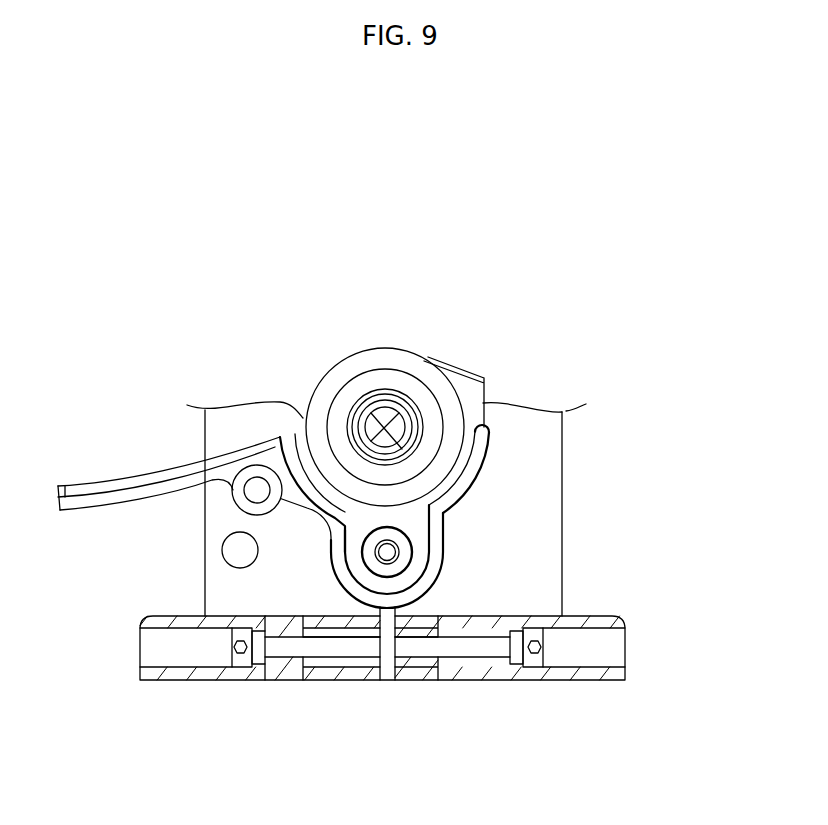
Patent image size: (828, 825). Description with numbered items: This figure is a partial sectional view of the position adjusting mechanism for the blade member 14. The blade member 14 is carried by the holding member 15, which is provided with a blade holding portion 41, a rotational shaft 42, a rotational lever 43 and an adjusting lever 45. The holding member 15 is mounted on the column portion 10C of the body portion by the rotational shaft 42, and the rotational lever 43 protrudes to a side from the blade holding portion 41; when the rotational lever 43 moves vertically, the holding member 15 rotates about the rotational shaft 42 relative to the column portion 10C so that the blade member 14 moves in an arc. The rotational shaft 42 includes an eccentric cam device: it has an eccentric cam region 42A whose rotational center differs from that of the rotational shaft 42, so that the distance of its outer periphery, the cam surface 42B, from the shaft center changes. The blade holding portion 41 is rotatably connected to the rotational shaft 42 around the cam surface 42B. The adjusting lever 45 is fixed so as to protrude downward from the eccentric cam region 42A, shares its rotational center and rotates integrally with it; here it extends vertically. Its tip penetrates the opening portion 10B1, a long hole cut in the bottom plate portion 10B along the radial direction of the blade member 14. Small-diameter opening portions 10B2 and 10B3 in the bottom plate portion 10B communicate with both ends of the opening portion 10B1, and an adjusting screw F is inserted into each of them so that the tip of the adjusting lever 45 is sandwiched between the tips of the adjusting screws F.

The blade member 14 is at (397, 360).
The holding member 15 is at (279, 414).
The blade holding portion 41 is at (477, 450).
The rotational shaft 42 is at (393, 552).
The eccentric cam region 42A is at (397, 538).
The cam surface 42B is at (357, 550).
The rotational lever 43 is at (120, 490).
The adjusting lever 45 is at (388, 681).
The bottom plate portion 10B is at (614, 608).
The opening portion 10B1 is at (312, 672).
The small-diameter opening portion 10B2 is at (155, 630).
The small-diameter opening portion 10B3 is at (597, 628).
The column portion 10C is at (547, 478).
The adjusting screw F is at (338, 657).